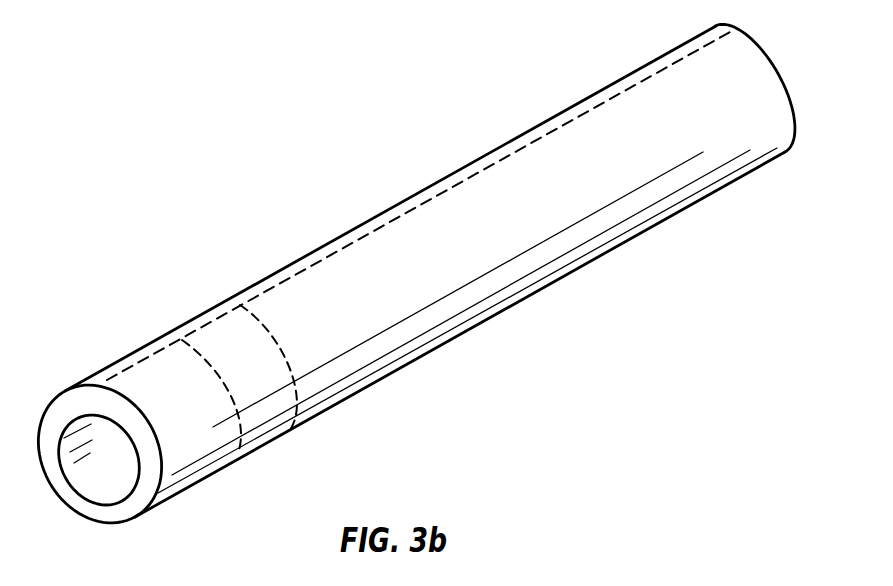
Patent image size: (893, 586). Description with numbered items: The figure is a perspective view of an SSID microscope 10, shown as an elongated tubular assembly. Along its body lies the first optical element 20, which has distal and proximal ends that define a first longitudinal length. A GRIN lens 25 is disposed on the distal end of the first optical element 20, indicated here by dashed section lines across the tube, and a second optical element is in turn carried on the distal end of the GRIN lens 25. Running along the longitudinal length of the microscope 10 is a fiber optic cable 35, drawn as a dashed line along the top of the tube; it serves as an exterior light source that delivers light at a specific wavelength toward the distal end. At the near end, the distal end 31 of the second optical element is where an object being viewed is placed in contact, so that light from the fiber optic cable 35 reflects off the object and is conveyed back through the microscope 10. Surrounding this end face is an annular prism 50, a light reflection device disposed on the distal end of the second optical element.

The microscope 10 is at (703, 251).
The first optical element 20 is at (488, 283).
The GRIN lens 25 is at (262, 413).
The distal end of the second optical element 31 is at (84, 472).
The fiber optic cable 35 is at (433, 188).
The annular prism 50 is at (146, 492).